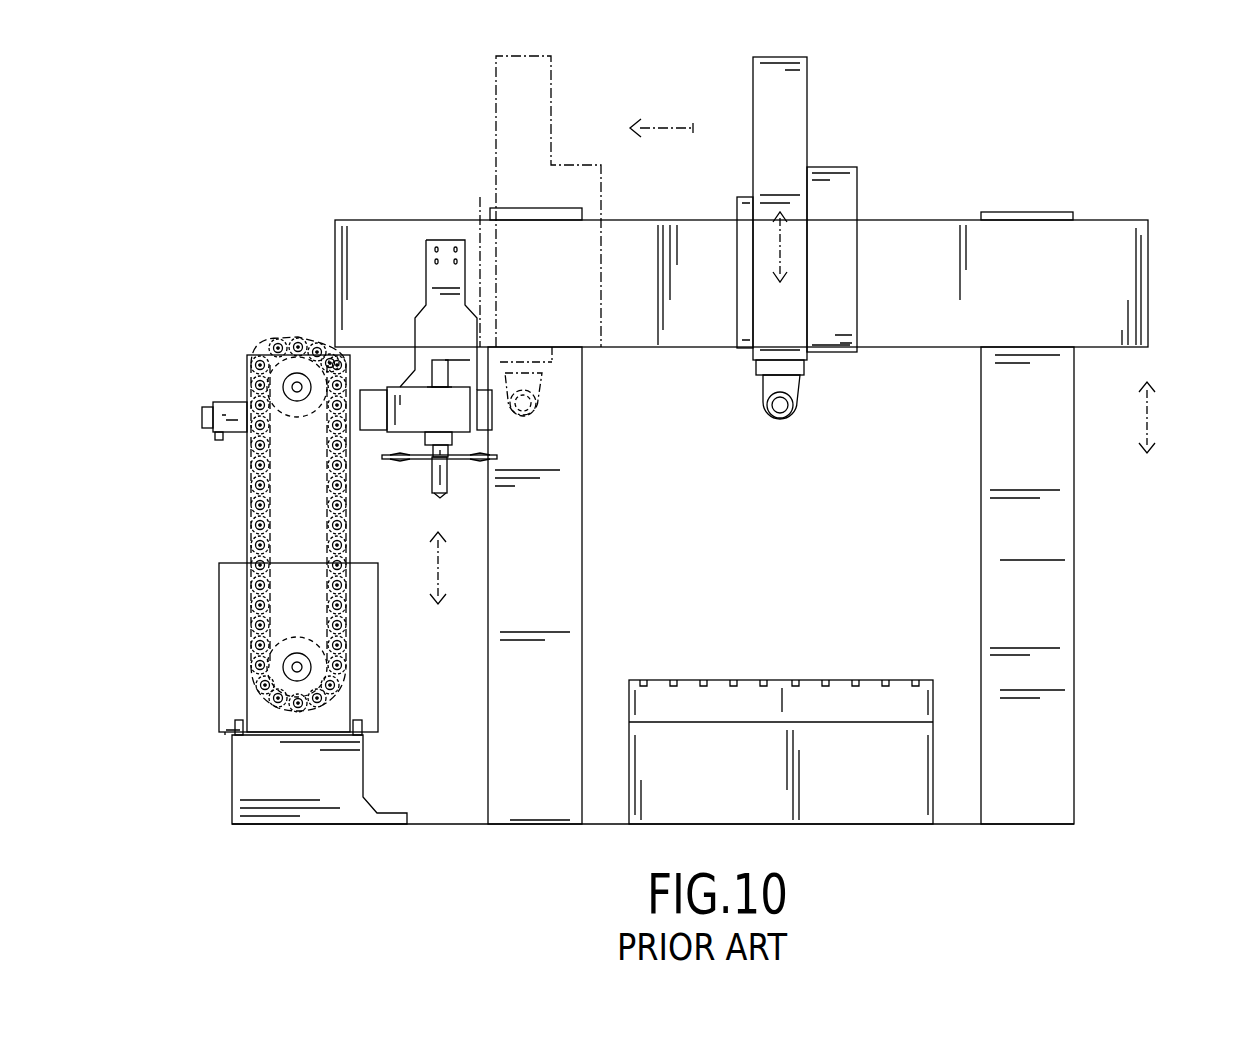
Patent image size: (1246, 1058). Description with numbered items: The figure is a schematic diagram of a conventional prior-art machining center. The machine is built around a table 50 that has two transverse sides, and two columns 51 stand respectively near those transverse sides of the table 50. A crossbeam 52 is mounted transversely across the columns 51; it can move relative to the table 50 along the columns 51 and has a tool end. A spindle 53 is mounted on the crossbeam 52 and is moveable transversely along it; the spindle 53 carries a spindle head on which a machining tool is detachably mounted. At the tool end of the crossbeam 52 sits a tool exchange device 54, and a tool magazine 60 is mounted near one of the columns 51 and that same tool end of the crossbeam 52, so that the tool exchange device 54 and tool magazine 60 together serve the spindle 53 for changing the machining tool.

The table 50 is at (775, 688).
The columns 51 is at (557, 608).
The crossbeam 52 is at (1132, 273).
The spindle 53 is at (848, 145).
The tool exchange device 54 is at (400, 322).
The tool magazine 60 is at (230, 494).